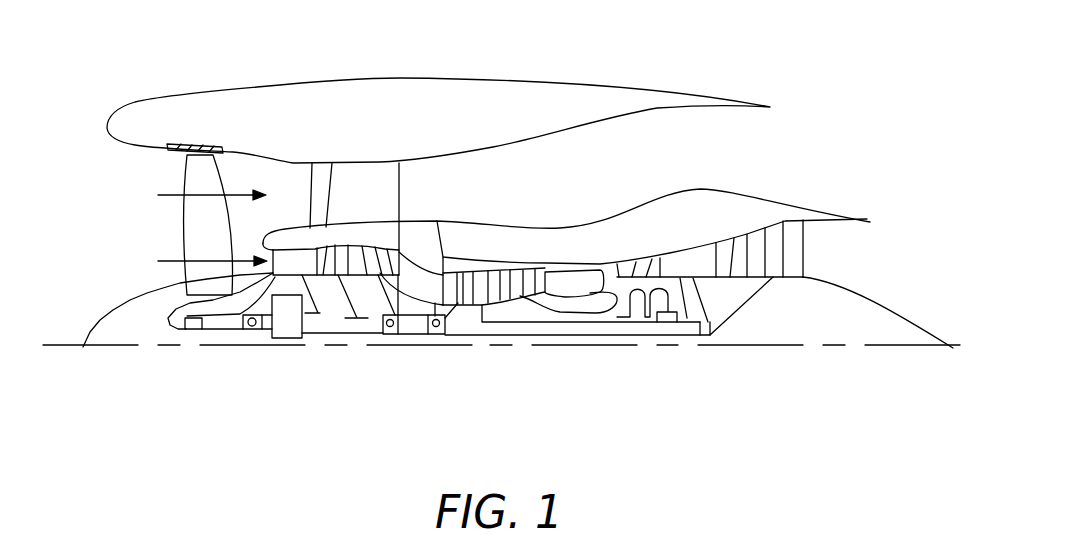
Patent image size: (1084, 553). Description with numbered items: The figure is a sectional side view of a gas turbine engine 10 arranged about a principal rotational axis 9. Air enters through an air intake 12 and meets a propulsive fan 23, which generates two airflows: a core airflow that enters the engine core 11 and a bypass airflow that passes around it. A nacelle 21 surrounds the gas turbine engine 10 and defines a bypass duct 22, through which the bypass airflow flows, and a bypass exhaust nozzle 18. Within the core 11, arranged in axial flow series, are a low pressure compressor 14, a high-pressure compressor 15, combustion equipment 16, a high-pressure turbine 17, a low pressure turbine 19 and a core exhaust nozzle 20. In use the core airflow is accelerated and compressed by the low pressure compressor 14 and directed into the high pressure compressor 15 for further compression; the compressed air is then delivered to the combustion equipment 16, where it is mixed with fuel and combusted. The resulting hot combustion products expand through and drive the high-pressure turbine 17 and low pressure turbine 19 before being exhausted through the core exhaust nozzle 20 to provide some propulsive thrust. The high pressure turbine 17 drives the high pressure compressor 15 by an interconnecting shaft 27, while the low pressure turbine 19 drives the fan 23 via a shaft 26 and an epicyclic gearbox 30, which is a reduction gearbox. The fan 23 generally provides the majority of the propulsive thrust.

The principal rotational axis 9 is at (810, 350).
The gas turbine engine 10 is at (183, 97).
The core 11 is at (550, 240).
The air intake 12 is at (138, 172).
The low pressure compressor 14 is at (355, 251).
The high-pressure compressor 15 is at (500, 283).
The combustion equipment 16 is at (575, 285).
The high-pressure turbine 17 is at (635, 270).
The bypass exhaust nozzle 18 is at (767, 143).
The low pressure turbine 19 is at (773, 238).
The core exhaust nozzle 20 is at (830, 250).
The nacelle 21 is at (412, 93).
The bypass duct 22 is at (702, 158).
The propulsive fan 23 is at (187, 227).
The shaft 26 is at (495, 335).
The interconnecting shaft 27 is at (535, 322).
The epicyclic gearbox 30 is at (283, 328).